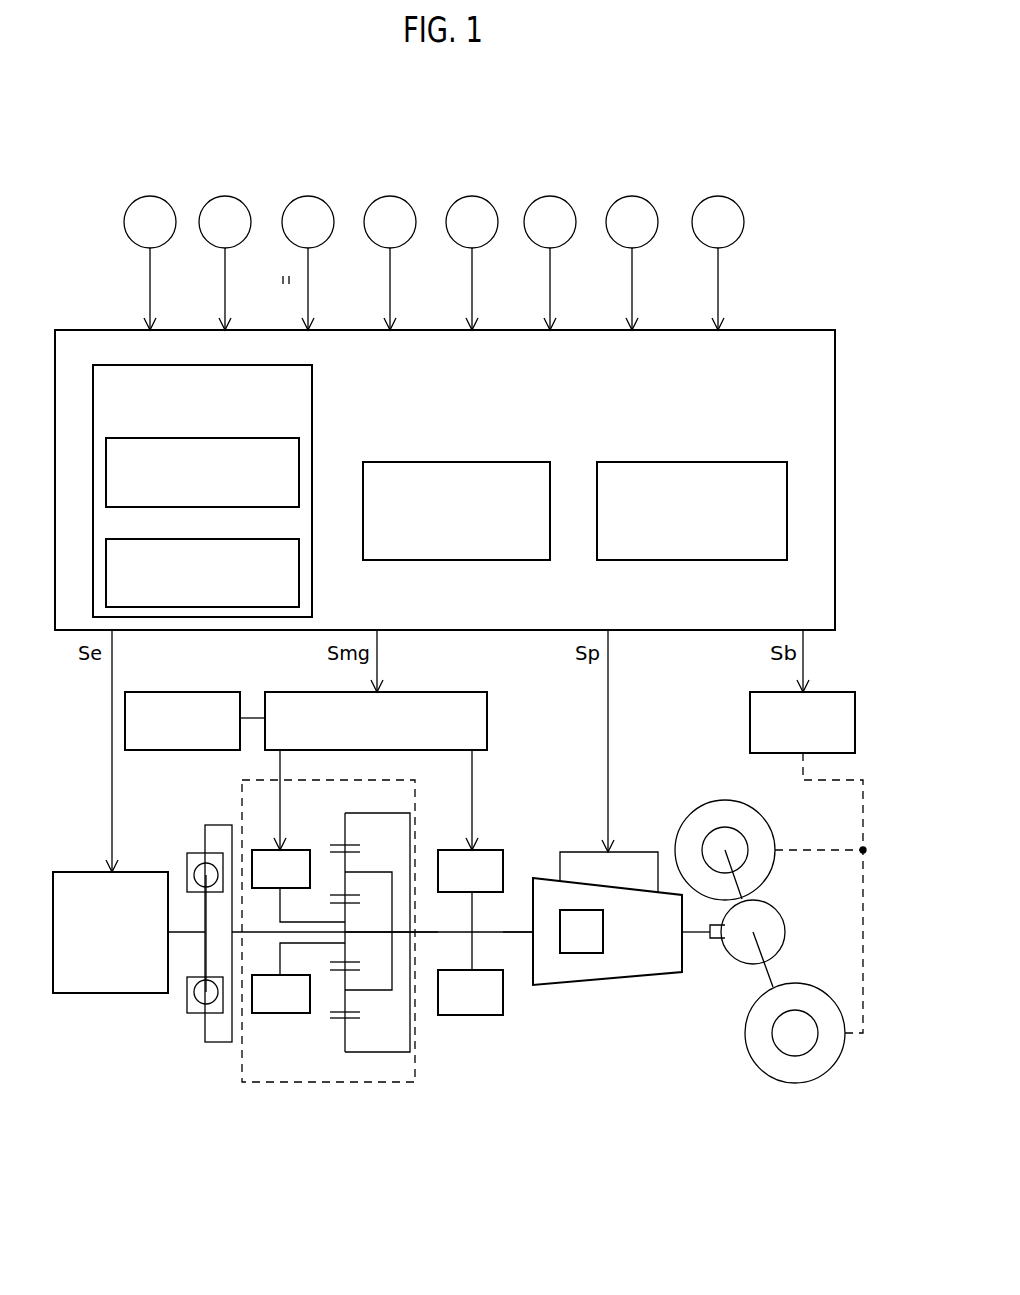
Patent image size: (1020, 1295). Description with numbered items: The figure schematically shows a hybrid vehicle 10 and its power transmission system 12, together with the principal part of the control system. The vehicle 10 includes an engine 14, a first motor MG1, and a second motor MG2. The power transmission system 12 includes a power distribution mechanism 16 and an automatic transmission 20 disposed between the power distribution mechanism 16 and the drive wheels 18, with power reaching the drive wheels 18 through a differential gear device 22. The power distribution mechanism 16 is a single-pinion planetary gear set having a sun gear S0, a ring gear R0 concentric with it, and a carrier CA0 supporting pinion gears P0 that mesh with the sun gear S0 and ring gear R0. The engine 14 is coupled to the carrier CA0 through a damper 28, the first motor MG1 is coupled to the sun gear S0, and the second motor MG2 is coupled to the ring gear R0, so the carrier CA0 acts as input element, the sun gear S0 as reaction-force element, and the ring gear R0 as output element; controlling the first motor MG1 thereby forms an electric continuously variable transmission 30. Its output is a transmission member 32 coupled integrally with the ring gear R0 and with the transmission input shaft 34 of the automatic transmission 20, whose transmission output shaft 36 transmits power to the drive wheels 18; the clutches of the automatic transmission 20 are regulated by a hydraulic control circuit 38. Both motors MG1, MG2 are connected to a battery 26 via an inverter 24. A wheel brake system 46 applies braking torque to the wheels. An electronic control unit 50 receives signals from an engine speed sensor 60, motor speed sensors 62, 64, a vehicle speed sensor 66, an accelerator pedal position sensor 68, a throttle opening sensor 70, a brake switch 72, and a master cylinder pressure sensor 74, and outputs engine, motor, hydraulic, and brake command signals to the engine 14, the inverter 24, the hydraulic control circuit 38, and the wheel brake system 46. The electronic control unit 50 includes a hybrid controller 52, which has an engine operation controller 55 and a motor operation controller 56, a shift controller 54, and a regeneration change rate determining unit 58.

The vehicle 10 is at (455, 132).
The power transmission system 12 is at (302, 1163).
The engine 14 is at (87, 977).
The power distribution mechanism 16 is at (328, 969).
The drive wheels 18 is at (760, 832).
The automatic transmission 20 is at (547, 1007).
The differential gear device 22 is at (765, 925).
The inverter 24 is at (448, 700).
The battery 26 is at (198, 700).
The damper 28 is at (193, 1018).
The electric continuously variable transmission 30 is at (368, 935).
The transmission member 32 is at (428, 935).
The transmission input shaft 34 is at (513, 937).
The transmission output shaft 36 is at (695, 940).
The hydraulic control circuit 38 is at (620, 862).
The wheel brake system 46 is at (818, 700).
The electronic control unit 50 is at (812, 345).
The hybrid controller 52 is at (262, 375).
The shift controller 54 is at (505, 478).
The engine operation controller 55 is at (232, 445).
The motor operation controller 56 is at (232, 545).
The regeneration change rate determining unit 58 is at (740, 478).
The engine speed sensor 60 is at (152, 212).
The motor speed sensor 62 is at (227, 212).
The motor speed sensor 64 is at (310, 212).
The vehicle speed sensor 66 is at (392, 212).
The accelerator pedal position sensor 68 is at (474, 212).
The throttle opening sensor 70 is at (552, 212).
The brake switch 72 is at (634, 212).
The master cylinder pressure sensor 74 is at (720, 212).
The first motor MG1 is at (281, 869).
The second motor MG2 is at (470, 932).
The ring gear R0 is at (341, 843).
The carrier CA0 is at (375, 870).
The pinion gears P0 is at (340, 896).
The sun gear S0 is at (347, 904).